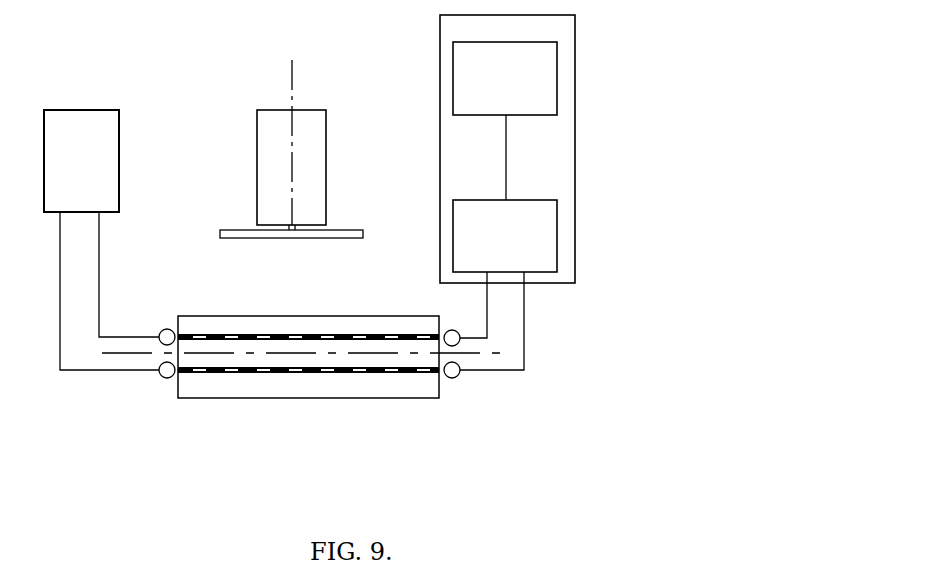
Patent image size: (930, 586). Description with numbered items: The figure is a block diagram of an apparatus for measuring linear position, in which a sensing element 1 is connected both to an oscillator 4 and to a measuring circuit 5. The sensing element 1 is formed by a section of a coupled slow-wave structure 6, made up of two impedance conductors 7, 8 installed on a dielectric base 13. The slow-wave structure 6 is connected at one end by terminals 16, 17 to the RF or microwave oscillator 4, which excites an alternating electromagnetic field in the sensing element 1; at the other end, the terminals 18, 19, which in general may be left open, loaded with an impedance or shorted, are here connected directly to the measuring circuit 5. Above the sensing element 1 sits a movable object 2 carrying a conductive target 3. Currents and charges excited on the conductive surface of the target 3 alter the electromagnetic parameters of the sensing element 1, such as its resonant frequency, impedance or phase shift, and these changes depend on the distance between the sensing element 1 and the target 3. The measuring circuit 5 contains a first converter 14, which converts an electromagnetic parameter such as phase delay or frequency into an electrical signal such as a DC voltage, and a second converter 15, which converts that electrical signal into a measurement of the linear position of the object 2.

The sensing element 1 is at (390, 416).
The movable object 2 is at (328, 135).
The conductive target 3 is at (233, 233).
The oscillator 4 is at (102, 115).
The measuring circuit 5 is at (587, 173).
The coupled slow-wave structure 6 is at (277, 393).
The impedance conductor 7 is at (280, 334).
The impedance conductor 8 is at (247, 375).
The dielectric base 13 is at (220, 350).
The first converter 14 is at (550, 248).
The second converter 15 is at (555, 90).
The terminal 16 is at (165, 329).
The terminal 17 is at (165, 378).
The terminal 18 is at (447, 330).
The terminal 19 is at (460, 377).